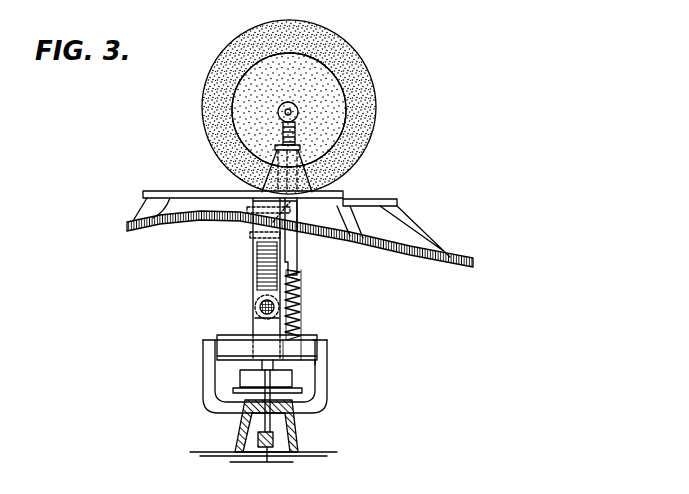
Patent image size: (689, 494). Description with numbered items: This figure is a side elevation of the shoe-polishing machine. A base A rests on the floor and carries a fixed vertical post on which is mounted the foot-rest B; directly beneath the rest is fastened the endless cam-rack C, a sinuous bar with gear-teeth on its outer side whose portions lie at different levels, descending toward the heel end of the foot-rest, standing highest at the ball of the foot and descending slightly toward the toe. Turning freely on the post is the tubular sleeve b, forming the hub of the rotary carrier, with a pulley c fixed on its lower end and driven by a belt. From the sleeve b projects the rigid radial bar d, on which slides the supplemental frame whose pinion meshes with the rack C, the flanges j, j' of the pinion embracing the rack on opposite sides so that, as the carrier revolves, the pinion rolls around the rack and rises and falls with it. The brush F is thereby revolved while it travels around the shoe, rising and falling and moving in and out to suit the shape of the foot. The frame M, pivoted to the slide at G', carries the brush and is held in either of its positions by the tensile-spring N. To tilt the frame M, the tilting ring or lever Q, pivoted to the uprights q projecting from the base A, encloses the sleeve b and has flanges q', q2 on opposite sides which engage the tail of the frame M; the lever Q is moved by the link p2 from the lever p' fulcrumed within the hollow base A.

The brush F is at (295, 107).
The foot-rest B is at (291, 215).
The cam-rack C is at (300, 239).
The tubular shaft or sleeve b is at (255, 285).
The flange j is at (281, 213).
The lower clamp block j' is at (253, 244).
The frame M is at (300, 254).
The tensile-spring N is at (299, 305).
The pivot G' is at (248, 307).
The radial bar or arm d is at (258, 316).
The tilting ring or lever Q is at (267, 347).
The flange q' is at (299, 339).
The upright q is at (249, 376).
The pulley c is at (240, 378).
The flange q2 is at (312, 365).
The base A is at (293, 434).
The rod or link p2 is at (257, 437).
The lever p' is at (276, 464).